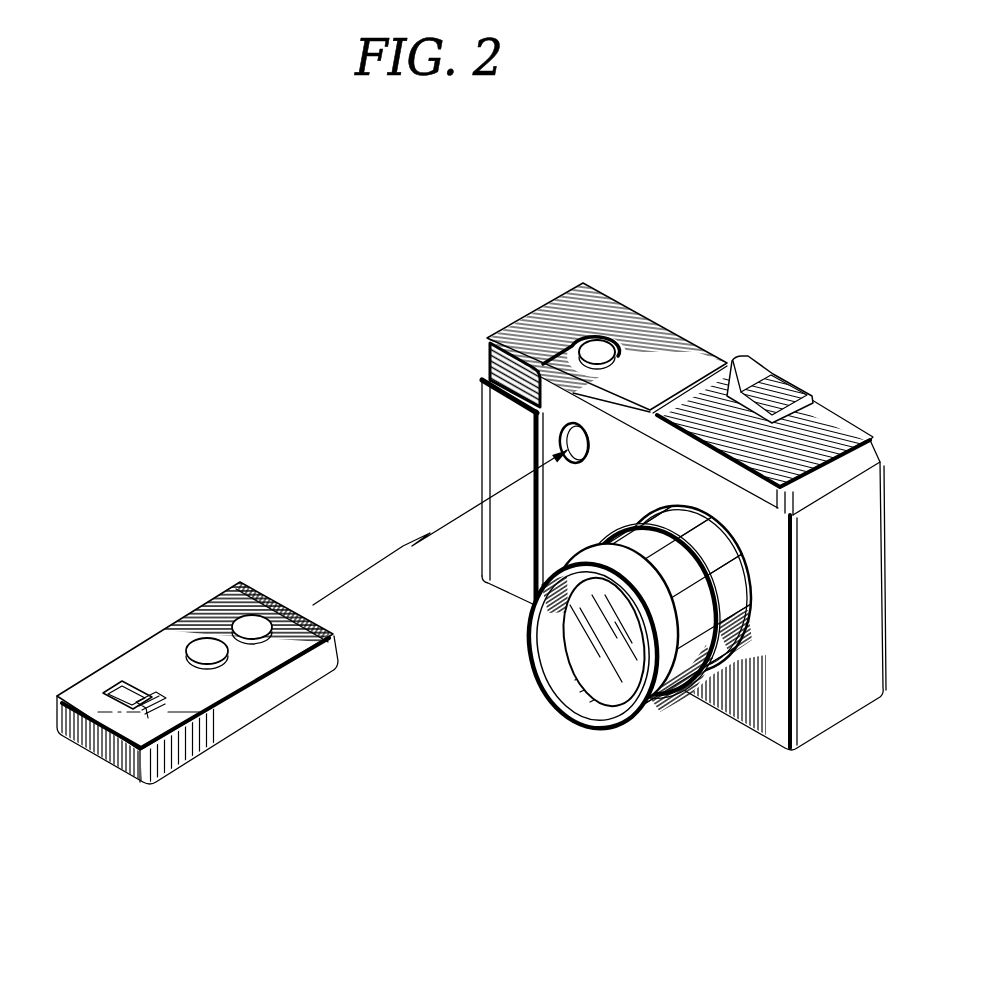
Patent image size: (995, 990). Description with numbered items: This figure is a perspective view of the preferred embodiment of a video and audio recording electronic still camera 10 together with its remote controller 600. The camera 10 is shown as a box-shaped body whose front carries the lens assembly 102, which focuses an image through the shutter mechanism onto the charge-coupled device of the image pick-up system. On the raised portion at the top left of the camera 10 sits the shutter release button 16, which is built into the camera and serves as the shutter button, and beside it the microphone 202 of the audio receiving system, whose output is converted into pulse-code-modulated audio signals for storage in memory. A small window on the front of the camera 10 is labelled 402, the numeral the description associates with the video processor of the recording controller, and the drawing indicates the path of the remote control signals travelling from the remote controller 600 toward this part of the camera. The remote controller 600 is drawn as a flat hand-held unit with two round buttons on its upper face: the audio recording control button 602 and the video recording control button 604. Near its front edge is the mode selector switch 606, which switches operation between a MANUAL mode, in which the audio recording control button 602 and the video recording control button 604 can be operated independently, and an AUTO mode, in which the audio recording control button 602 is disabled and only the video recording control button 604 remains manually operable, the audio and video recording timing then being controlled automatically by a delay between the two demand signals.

The still camera 10 is at (620, 534).
The shutter release button 16 is at (603, 348).
The lens assembly 102 is at (669, 650).
The microphone 202 is at (500, 368).
The video processor 402 is at (569, 442).
The remote controller 600 is at (193, 710).
The audio recording control button 602 is at (250, 627).
The video recording control button 604 is at (200, 648).
The mode selector switch 606 is at (140, 722).